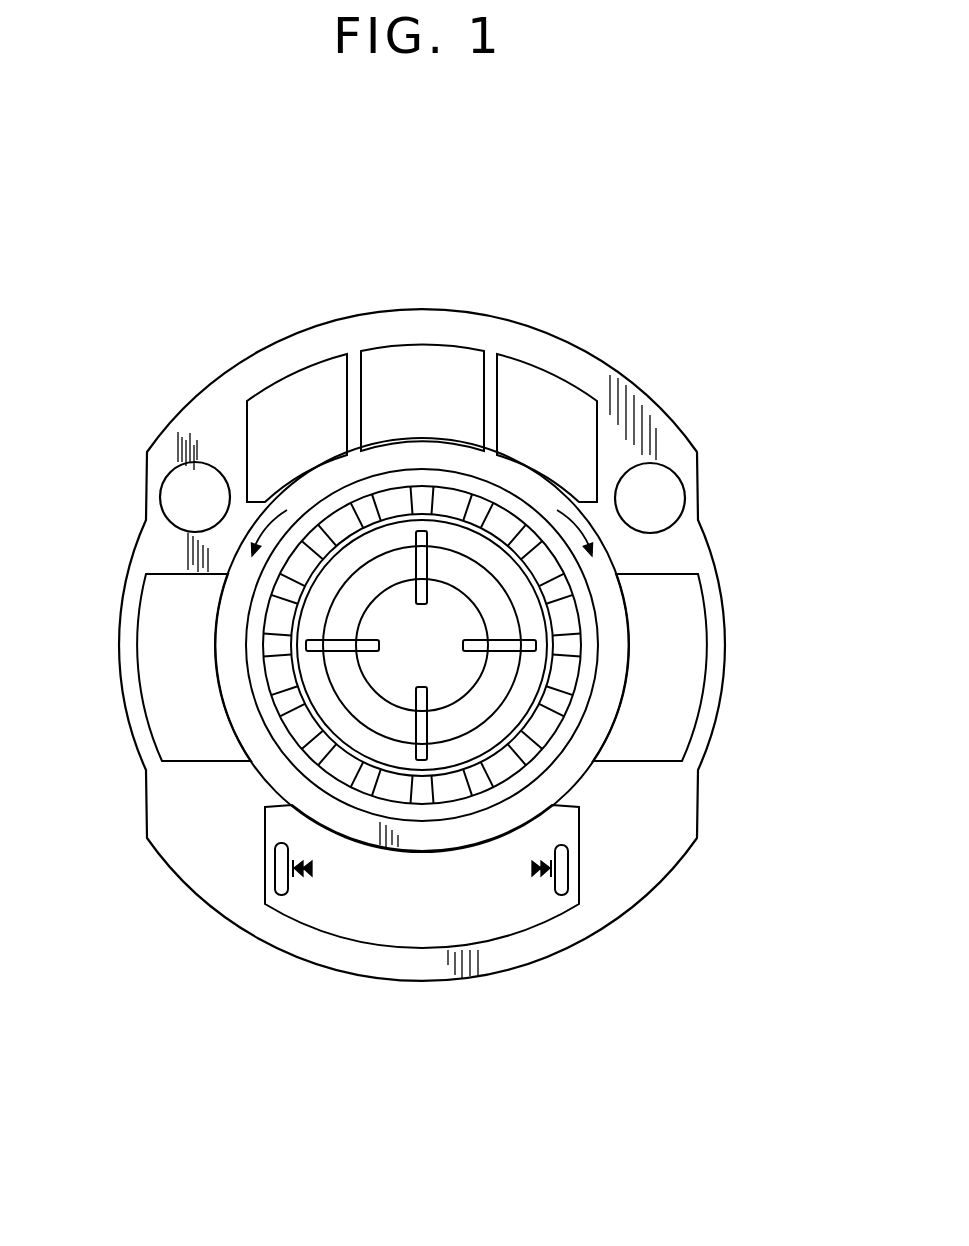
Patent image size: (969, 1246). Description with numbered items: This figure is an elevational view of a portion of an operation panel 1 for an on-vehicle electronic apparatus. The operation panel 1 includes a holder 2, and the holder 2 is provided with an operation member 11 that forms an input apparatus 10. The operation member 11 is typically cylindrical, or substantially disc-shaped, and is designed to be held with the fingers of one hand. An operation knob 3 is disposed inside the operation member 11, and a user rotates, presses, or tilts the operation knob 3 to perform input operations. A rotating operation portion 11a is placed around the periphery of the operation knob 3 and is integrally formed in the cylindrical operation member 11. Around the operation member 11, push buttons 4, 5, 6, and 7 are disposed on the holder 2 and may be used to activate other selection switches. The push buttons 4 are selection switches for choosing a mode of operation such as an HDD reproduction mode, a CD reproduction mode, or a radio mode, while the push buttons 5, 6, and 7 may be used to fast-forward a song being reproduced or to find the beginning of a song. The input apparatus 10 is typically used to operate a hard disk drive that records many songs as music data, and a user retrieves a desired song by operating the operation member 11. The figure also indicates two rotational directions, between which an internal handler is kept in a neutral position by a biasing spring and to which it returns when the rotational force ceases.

The operation panel 1 is at (688, 373).
The holder 2 is at (673, 440).
The operation knob 3 is at (383, 672).
The push buttons 4 is at (520, 390).
The push button 5 is at (188, 497).
The push button 6 is at (165, 672).
The push button 7 is at (397, 922).
The input apparatus 10 is at (492, 762).
The operation member 11 is at (541, 741).
The rotating operation portion 11a is at (565, 673).